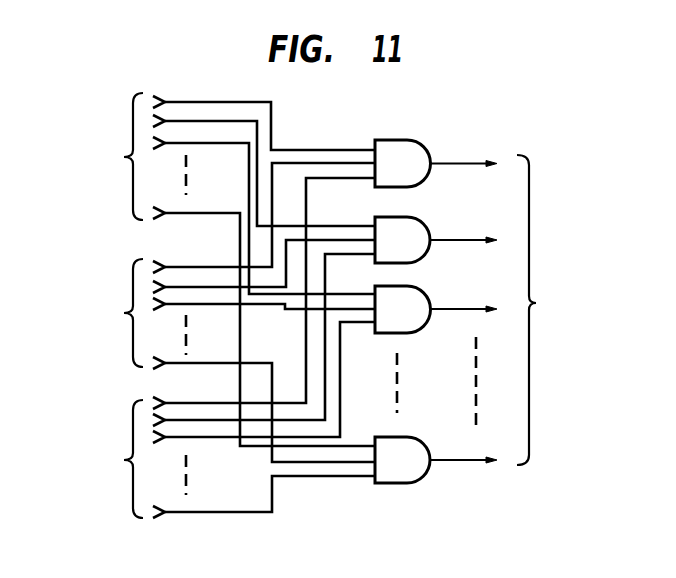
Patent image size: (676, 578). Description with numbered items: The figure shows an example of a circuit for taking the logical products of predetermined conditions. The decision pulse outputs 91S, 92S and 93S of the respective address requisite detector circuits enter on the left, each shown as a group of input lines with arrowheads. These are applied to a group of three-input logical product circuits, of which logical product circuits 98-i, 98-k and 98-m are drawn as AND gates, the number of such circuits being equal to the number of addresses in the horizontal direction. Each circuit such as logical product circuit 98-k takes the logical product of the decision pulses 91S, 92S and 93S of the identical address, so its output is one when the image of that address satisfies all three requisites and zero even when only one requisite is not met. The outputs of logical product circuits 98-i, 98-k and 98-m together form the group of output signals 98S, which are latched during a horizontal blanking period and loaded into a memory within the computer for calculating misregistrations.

The decision pulse output 91S is at (226, 269).
The decision pulse output 92S is at (226, 312).
The decision pulse output 93S is at (226, 348).
The 3-input logical product circuit 98-i is at (415, 152).
The 3-input logical product circuit 98-k is at (420, 300).
The 3-input logical product circuit 98-m is at (407, 475).
The group of output signals 98S is at (550, 310).